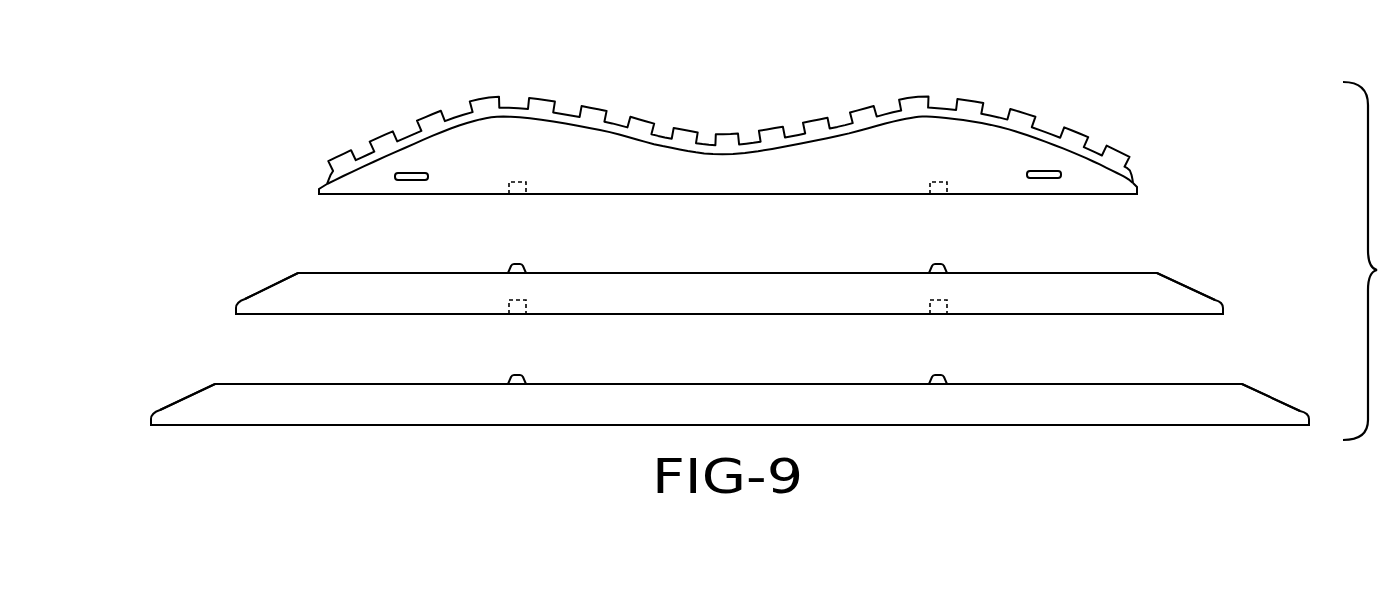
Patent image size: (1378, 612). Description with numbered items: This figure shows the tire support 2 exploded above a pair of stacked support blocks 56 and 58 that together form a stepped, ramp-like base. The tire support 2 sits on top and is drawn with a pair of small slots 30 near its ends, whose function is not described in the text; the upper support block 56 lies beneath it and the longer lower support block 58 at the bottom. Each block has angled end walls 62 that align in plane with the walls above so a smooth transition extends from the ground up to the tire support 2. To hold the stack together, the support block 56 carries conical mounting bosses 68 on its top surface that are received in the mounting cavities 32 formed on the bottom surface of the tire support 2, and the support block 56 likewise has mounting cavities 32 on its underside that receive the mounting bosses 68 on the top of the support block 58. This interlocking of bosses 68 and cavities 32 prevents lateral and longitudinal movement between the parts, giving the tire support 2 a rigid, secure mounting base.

The tire support 2 is at (1032, 100).
The slots 30 is at (408, 172).
The mounting cavity 32 is at (519, 195).
The support block 56 is at (1116, 268).
The support block 58 is at (1223, 378).
The angled end walls 62 is at (270, 286).
The mounting bosses 68 is at (512, 266).